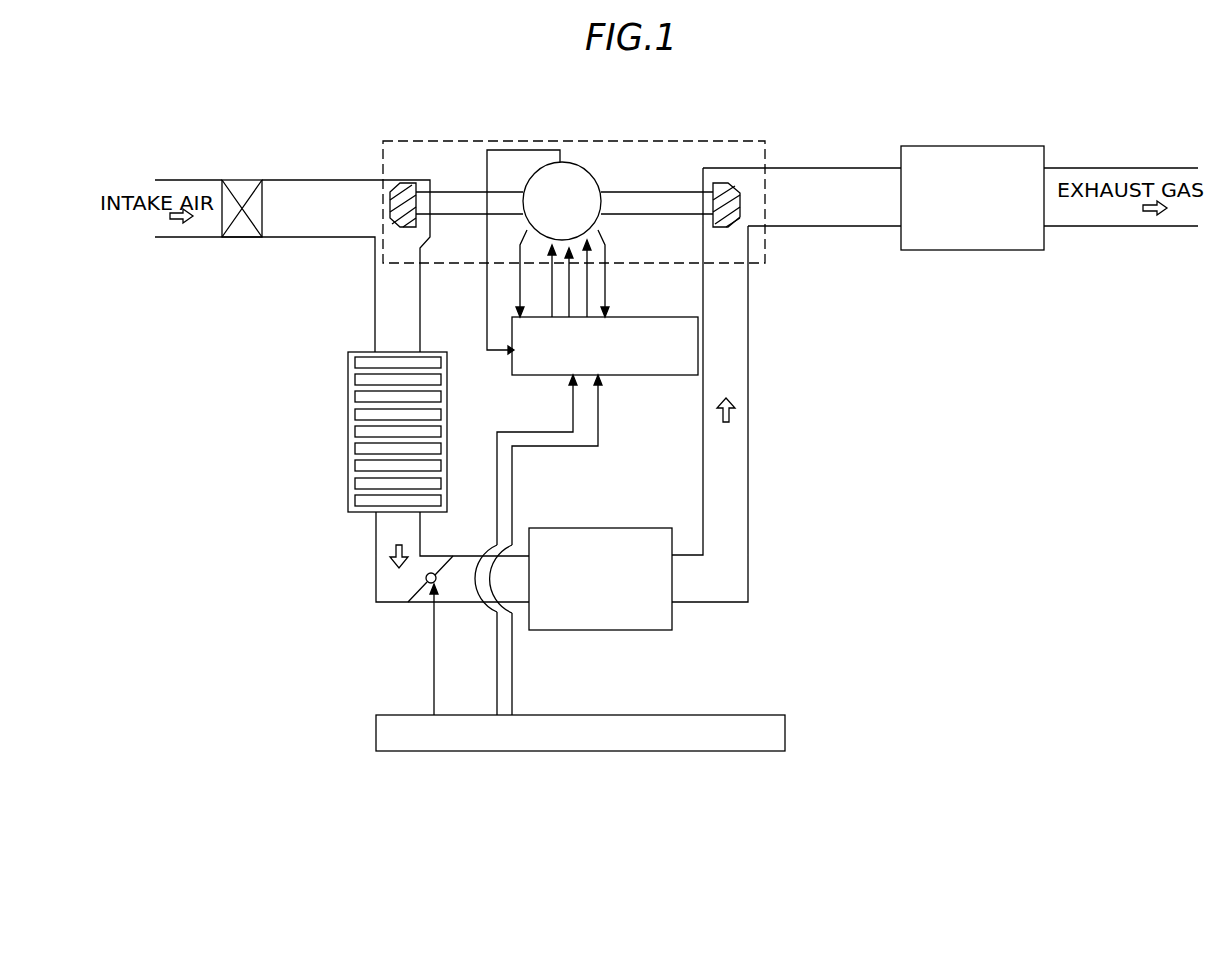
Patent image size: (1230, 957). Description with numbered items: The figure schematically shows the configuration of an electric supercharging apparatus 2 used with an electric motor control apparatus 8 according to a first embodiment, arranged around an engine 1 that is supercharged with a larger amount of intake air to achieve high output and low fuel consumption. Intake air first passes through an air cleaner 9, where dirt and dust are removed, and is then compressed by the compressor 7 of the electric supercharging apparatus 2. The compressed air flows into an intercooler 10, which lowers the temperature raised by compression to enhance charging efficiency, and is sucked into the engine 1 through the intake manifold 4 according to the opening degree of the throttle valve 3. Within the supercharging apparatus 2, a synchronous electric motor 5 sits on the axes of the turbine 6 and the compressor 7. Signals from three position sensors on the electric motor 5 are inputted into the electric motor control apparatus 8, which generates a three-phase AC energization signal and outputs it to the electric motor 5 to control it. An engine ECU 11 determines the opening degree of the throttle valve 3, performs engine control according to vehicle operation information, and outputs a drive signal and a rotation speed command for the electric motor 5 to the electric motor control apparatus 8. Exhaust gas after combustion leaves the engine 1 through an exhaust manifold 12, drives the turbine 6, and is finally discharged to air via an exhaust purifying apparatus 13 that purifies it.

The engine 1 is at (598, 528).
The electric supercharging apparatus 2 is at (655, 141).
The throttle valve 3 is at (416, 602).
The intake manifold 4 is at (460, 556).
The electric motor 5 is at (583, 162).
The turbine 6 is at (725, 183).
The compressor 7 is at (404, 183).
The electric motor control apparatus 8 is at (641, 317).
The air cleaner 9 is at (226, 180).
The intercooler 10 is at (448, 395).
The engine ECU 11 is at (585, 751).
The exhaust manifold 12 is at (749, 470).
The exhaust purifying apparatus 13 is at (969, 146).